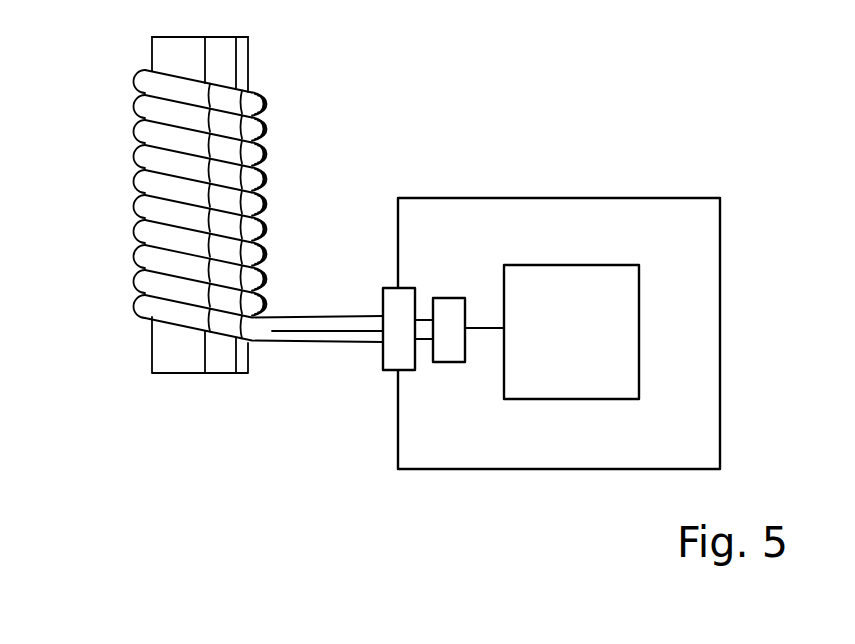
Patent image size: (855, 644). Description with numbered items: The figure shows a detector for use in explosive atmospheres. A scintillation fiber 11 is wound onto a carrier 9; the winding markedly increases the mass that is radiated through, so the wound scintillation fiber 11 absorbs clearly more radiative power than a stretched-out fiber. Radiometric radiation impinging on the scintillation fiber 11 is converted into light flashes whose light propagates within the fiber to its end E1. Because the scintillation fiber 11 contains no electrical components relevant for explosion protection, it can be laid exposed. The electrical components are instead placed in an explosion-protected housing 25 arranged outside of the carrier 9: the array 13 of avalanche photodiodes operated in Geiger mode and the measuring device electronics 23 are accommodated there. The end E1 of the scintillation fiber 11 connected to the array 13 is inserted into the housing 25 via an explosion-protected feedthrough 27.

The carrier 9 is at (180, 362).
The scintillation fiber 11 is at (134, 180).
The array of avalanche photodiodes 13 is at (447, 352).
The measuring device electronics 23 is at (590, 347).
The explosion-protected housing 25 is at (501, 198).
The explosion-protected feedthrough 27 is at (392, 355).
The end of scintillation fiber E1 is at (425, 322).